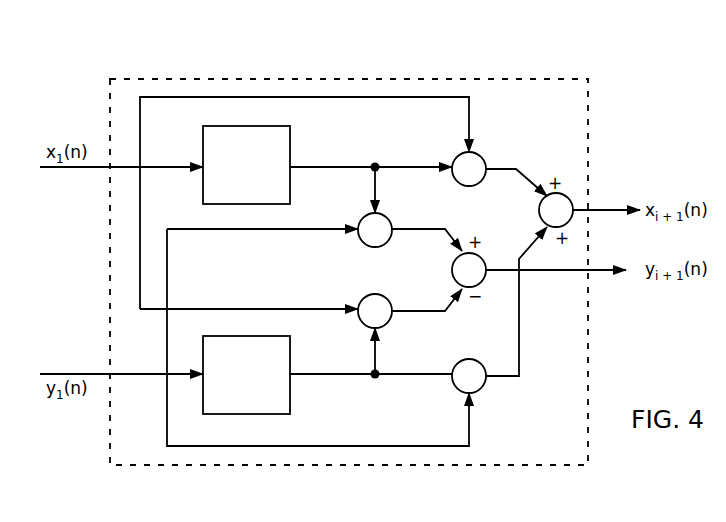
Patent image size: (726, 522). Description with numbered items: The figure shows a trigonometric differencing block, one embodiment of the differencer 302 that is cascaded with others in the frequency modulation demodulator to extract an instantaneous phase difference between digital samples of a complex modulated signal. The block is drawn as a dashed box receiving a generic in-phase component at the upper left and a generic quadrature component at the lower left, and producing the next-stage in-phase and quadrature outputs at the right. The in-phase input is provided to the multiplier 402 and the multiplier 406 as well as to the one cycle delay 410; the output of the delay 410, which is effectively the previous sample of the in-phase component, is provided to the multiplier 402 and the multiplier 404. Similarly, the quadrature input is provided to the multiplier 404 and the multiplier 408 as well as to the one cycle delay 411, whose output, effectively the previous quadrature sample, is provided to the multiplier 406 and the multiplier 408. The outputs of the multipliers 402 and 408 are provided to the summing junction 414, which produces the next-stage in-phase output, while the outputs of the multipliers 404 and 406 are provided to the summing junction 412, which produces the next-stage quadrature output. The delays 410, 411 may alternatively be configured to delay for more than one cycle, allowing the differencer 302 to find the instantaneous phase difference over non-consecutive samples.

The differencer 302 is at (419, 50).
The multiplier 402 is at (481, 156).
The multiplier 404 is at (385, 217).
The multiplier 406 is at (378, 295).
The multiplier 408 is at (467, 360).
The one cycle delay 410 is at (234, 126).
The one cycle delay 411 is at (236, 336).
The summing junction 412 is at (481, 256).
The summing junction 414 is at (575, 203).